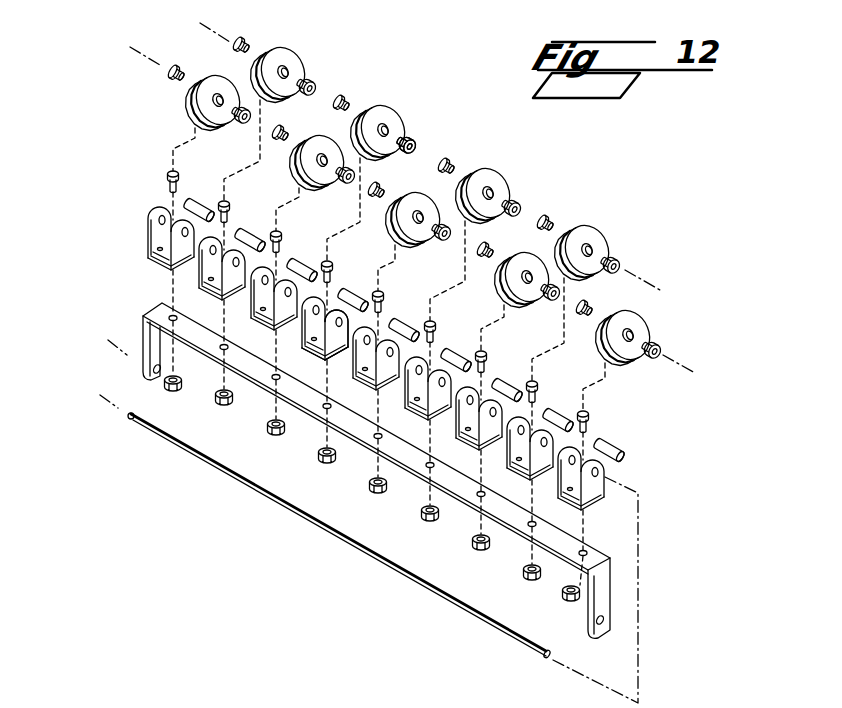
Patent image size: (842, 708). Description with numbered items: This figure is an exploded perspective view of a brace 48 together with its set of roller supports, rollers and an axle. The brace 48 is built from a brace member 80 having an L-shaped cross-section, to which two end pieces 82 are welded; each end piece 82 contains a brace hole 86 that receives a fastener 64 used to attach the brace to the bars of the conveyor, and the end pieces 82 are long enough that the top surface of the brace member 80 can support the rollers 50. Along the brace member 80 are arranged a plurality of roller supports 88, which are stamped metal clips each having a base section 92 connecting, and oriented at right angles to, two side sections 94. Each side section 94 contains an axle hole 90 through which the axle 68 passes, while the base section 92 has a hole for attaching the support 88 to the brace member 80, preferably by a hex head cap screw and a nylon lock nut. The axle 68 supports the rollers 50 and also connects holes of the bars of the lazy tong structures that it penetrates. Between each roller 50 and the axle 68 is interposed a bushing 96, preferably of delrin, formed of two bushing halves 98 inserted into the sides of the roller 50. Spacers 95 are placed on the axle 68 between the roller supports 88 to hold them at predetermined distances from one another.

The brace 48 is at (152, 309).
The roller 50 is at (300, 63).
The fastener 64 is at (380, 293).
The axle 68 is at (287, 506).
The brace member 80 is at (318, 414).
The end piece 82 is at (146, 386).
The brace hole 86 is at (272, 379).
The roller support 88 is at (324, 362).
The axle hole 90 is at (331, 311).
The base section 92 is at (312, 347).
The side section 94 is at (258, 292).
The spacer 95 is at (248, 228).
The bushing 96 is at (420, 147).
The bushing half 98 is at (401, 140).